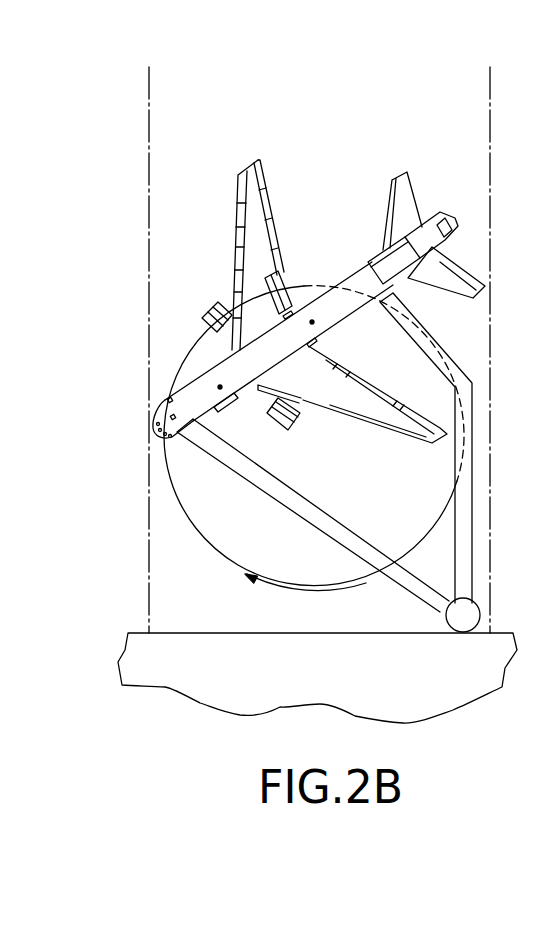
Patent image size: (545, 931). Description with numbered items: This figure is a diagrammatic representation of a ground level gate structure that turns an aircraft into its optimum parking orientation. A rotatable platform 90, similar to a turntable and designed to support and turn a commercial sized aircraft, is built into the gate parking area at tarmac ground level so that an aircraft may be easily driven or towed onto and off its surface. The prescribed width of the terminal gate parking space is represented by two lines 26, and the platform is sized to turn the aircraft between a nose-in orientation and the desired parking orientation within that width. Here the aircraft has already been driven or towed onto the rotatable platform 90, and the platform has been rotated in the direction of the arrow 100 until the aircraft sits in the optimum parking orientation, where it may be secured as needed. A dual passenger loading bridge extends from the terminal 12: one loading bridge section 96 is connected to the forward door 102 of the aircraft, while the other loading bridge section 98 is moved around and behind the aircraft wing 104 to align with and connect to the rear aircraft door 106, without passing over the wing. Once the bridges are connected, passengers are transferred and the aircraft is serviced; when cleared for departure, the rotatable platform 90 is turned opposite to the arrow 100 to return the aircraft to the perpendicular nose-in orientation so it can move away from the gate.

The terminal 12 is at (166, 628).
The lines 26 is at (150, 145).
The rotatable platform 90 is at (268, 533).
The loading bridge section 96 is at (418, 583).
The loading bridge section 98 is at (463, 548).
The arrow 100 is at (300, 594).
The forward door 102 is at (170, 445).
The aircraft wing 104 is at (347, 390).
The rear aircraft door 106 is at (362, 268).